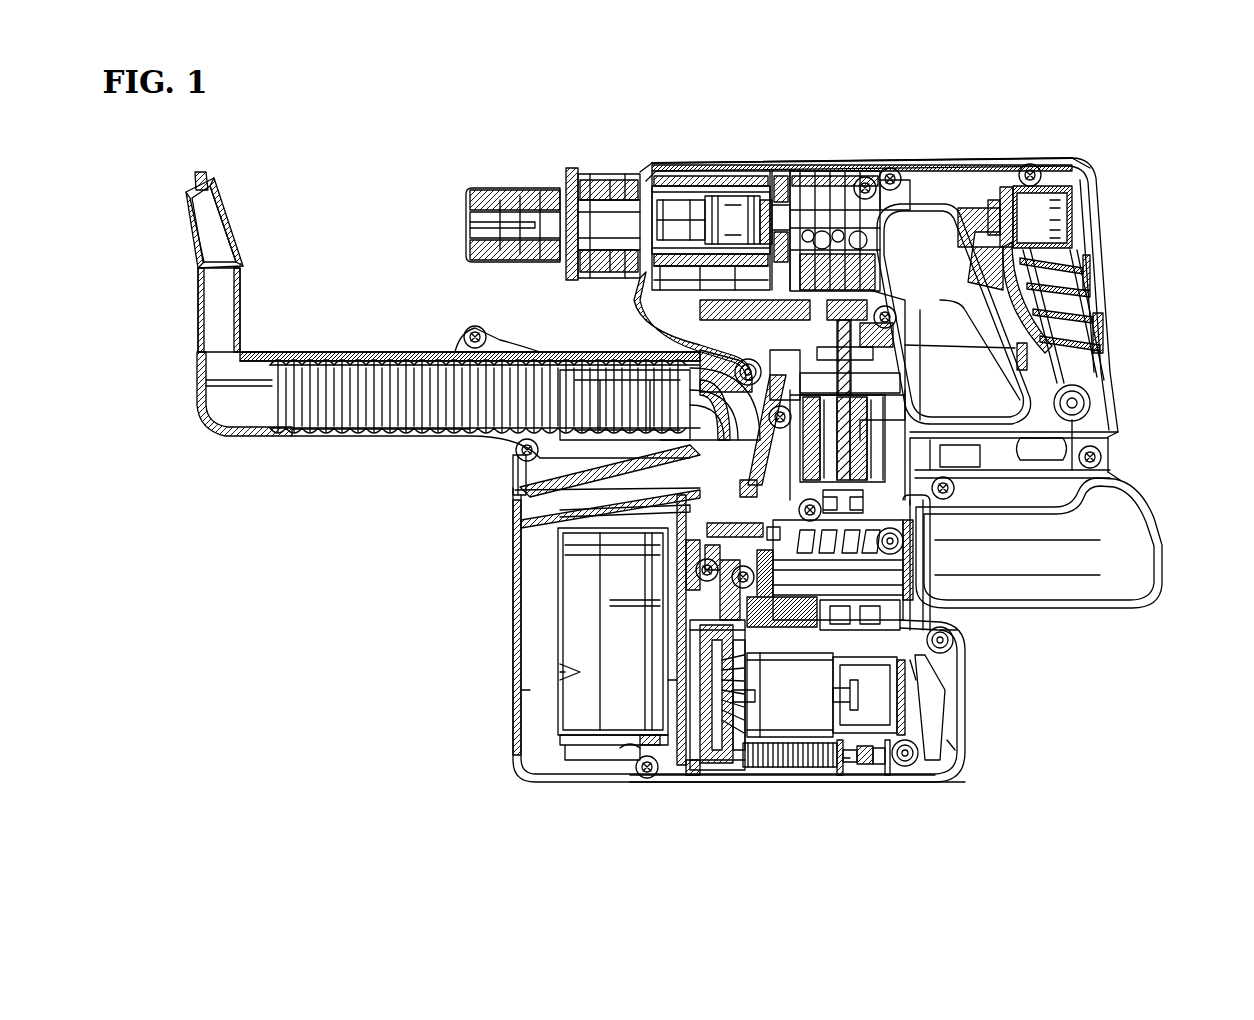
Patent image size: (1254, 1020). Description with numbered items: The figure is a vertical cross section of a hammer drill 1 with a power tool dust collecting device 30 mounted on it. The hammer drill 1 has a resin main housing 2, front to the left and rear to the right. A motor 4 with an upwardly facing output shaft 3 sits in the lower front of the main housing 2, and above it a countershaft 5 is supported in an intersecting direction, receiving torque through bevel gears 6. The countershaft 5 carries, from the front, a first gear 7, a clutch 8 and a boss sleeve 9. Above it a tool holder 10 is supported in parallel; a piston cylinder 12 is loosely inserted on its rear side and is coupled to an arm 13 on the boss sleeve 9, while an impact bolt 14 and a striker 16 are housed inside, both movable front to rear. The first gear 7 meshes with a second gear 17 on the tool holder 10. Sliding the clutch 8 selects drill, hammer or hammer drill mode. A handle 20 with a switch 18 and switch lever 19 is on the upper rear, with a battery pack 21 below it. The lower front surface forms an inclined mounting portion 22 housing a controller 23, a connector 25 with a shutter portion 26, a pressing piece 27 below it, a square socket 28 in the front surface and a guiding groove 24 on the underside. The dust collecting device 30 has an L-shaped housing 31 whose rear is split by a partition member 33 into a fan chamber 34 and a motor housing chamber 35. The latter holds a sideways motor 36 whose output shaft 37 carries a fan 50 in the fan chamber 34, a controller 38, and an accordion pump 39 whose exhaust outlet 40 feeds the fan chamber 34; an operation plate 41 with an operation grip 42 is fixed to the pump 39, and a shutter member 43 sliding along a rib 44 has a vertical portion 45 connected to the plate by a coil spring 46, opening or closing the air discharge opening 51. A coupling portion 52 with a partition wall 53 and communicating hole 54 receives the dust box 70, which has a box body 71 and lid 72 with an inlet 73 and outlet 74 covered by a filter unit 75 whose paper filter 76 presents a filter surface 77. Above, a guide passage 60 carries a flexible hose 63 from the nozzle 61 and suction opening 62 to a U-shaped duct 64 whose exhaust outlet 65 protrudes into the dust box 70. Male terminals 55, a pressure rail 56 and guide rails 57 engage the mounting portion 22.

The hammer drill 1 is at (1100, 138).
The main housing 2 is at (890, 152).
The output shaft 3 is at (925, 348).
The motor 4 is at (1078, 412).
The countershaft 5 is at (698, 216).
The bevel gears 6 is at (822, 170).
The first gear 7 is at (680, 312).
The clutch 8 is at (746, 210).
The boss sleeve 9 is at (788, 180).
The tool holder 10 is at (588, 188).
The piston cylinder 12 is at (724, 212).
The arm 13 is at (771, 180).
The impact bolt 14 is at (614, 186).
The striker 16 is at (684, 170).
The second gear 17 is at (660, 166).
The switch 18 is at (1058, 215).
The switch lever 19 is at (945, 225).
The handle 20 is at (1100, 294).
The battery pack 21 is at (1159, 558).
The mounting portion 22 is at (645, 378).
The controller 23 is at (900, 570).
The guiding groove 24 is at (598, 698).
The connector 25 is at (667, 590).
The shutter portion 26 is at (640, 530).
The pressing piece 27 is at (667, 612).
The socket 28 is at (663, 578).
The power tool dust collecting device 30 is at (933, 758).
The housing 31 is at (663, 785).
The partition member 33 is at (744, 790).
The fan chamber 34 is at (730, 782).
The motor housing chamber 35 is at (865, 770).
The motor 36 is at (797, 661).
The output shaft 37 is at (857, 688).
The controller 38 is at (933, 705).
The pump 39 is at (786, 769).
The exhaust outlet 40 is at (905, 712).
The operation plate 41 is at (838, 772).
The operation grip 42 is at (842, 790).
The shutter member 43 is at (858, 790).
The rib 44 is at (895, 773).
The vertical portion 45 is at (948, 763).
The coil spring 46 is at (878, 772).
The fan 50 is at (720, 788).
The air discharge opening 51 is at (737, 790).
The coupling portion 52 is at (514, 484).
The partition wall 53 is at (640, 788).
The communicating hole 54 is at (655, 742).
The male terminals 55 is at (690, 558).
The pressure rail 56 is at (925, 605).
The guide rails 57 is at (977, 593).
The guide passage 60 is at (530, 356).
The nozzle 61 is at (218, 284).
The suction opening 62 is at (210, 214).
The flexible hose 63 is at (340, 354).
The duct 64 is at (580, 368).
The exhaust outlet 65 is at (535, 506).
The dust box 70 is at (542, 790).
The box body 71 is at (512, 640).
The lid 72 is at (673, 780).
The inlet 73 is at (640, 502).
The outlet 74 is at (620, 750).
The filter unit 75 is at (523, 691).
The paper filter 76 is at (680, 684).
The filter surface 77 is at (693, 697).